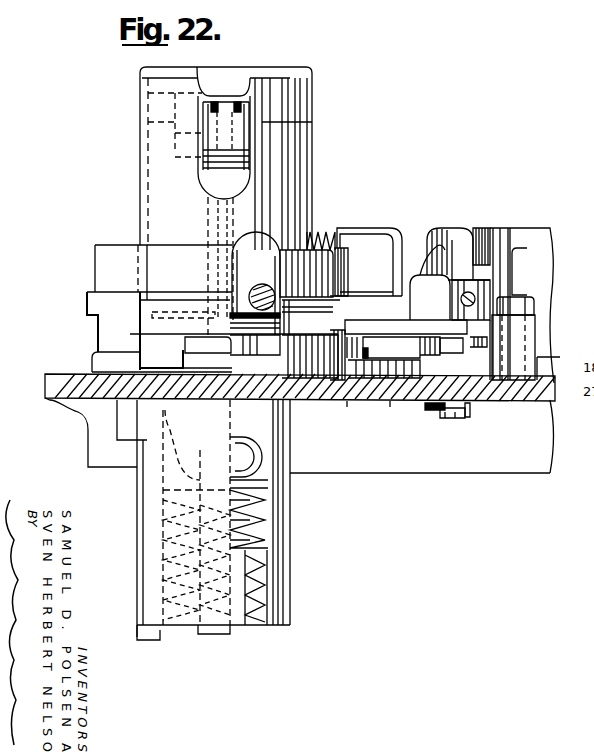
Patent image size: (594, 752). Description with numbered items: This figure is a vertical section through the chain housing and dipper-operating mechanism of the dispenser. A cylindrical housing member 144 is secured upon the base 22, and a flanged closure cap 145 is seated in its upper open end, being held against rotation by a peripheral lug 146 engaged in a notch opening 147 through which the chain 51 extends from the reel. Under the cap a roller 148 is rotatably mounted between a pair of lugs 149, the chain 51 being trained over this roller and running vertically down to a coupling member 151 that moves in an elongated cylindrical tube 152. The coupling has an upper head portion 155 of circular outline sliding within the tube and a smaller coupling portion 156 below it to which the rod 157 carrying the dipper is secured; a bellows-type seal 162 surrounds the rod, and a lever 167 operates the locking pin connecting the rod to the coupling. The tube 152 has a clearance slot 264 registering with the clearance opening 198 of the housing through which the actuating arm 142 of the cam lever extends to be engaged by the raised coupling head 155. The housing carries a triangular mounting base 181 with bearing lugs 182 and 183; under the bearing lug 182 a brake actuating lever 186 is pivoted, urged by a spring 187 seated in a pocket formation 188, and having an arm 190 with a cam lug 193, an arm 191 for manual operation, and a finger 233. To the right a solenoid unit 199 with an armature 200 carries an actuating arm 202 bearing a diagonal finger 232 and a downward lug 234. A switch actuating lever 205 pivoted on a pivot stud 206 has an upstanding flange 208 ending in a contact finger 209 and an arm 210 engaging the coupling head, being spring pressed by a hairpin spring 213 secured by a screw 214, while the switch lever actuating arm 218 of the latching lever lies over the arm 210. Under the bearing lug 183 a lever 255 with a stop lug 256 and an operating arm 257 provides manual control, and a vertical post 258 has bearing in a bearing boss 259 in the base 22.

The base 22 is at (45, 386).
The chain 51 is at (248, 94).
The actuating arm 142 is at (262, 284).
The cylindrical housing member 144 is at (140, 168).
The flanged closure cap 145 is at (290, 77).
The peripheral lug 146 is at (236, 90).
The notch opening 147 is at (205, 69).
The roller 148 is at (205, 143).
The lugs 149 is at (148, 122).
The coupling member 151 is at (225, 362).
The elongated cylindrical tube 152 is at (285, 588).
The upper head portion 155 is at (282, 320).
The coupling portion 156 is at (263, 437).
The rod 157 is at (212, 636).
The bellows-type seal 162 is at (282, 512).
The lever 167 is at (250, 460).
The mounting base 181 is at (92, 362).
The bearing lug 182 is at (348, 262).
The bearing lug 183 is at (100, 245).
The brake actuating lever 186 is at (330, 317).
The spring 187 is at (322, 238).
The pocket formation 188 is at (364, 230).
The arm 190 is at (390, 258).
The arm 191 is at (280, 348).
The cam lug 193 is at (421, 274).
The clearance opening 198 is at (237, 242).
The solenoid unit 199 is at (522, 240).
The armature 200 is at (472, 229).
The actuating arm 202 is at (440, 228).
The switch actuating lever 205 is at (490, 403).
The pivot stud 206 is at (532, 312).
The upstanding flange 208 is at (469, 418).
The contact finger 209 is at (430, 325).
The arm 210 is at (358, 401).
The hairpin spring 213 is at (428, 412).
The screw 214 is at (447, 420).
The switch lever actuating arm 218 is at (392, 401).
The finger 232 is at (430, 318).
The finger 233 is at (452, 353).
The lug 234 is at (378, 345).
The lever 255 is at (234, 313).
The stop lug 256 is at (176, 442).
The operating arm 257 is at (87, 300).
The vertical post 258 is at (148, 640).
The bearing boss 259 is at (125, 428).
The clearance slot 264 is at (275, 542).